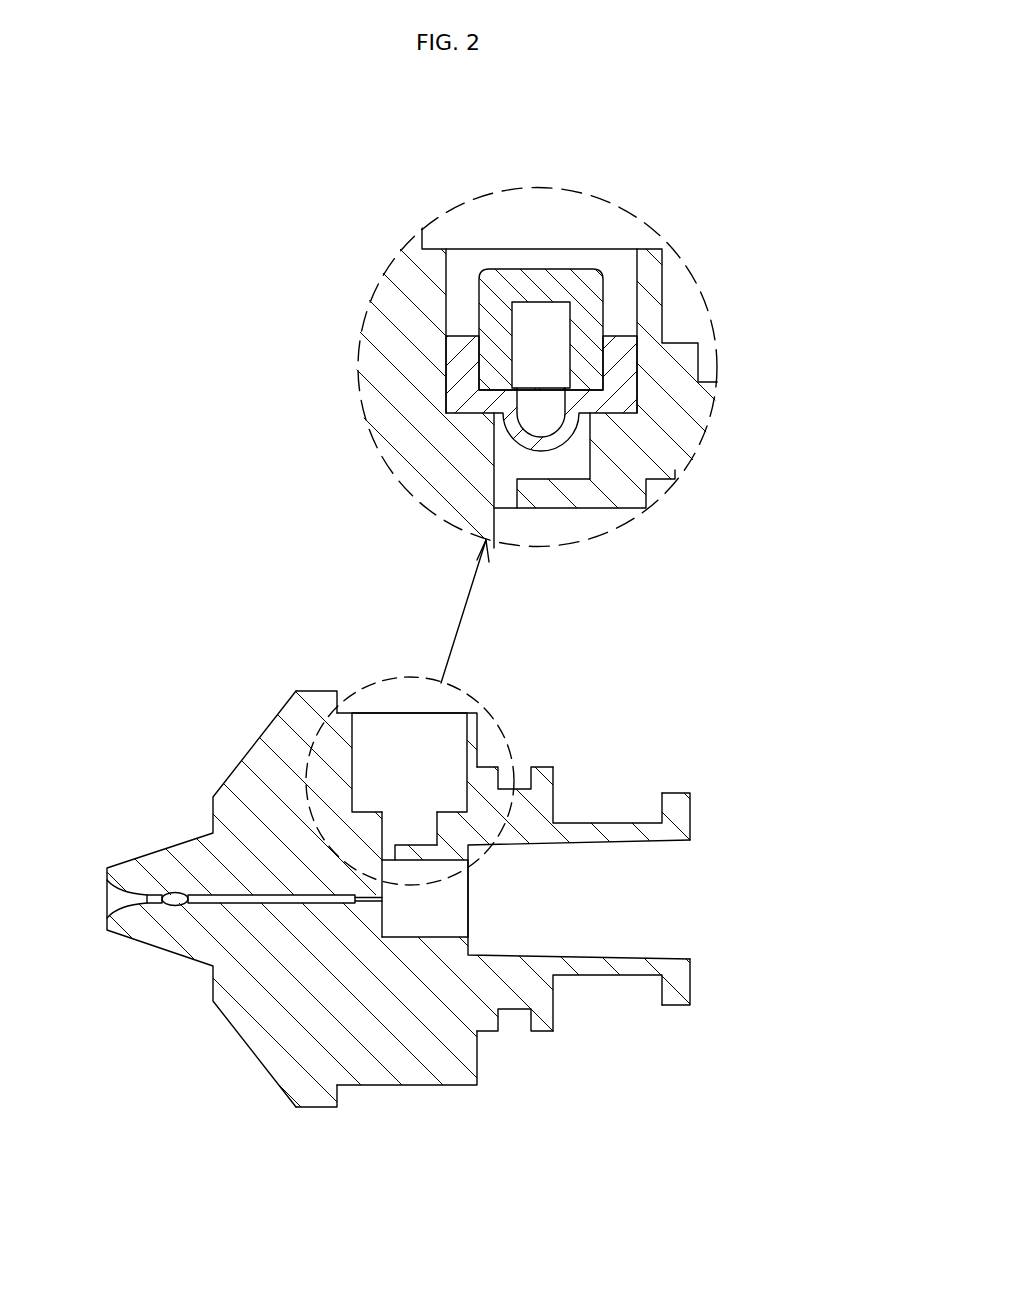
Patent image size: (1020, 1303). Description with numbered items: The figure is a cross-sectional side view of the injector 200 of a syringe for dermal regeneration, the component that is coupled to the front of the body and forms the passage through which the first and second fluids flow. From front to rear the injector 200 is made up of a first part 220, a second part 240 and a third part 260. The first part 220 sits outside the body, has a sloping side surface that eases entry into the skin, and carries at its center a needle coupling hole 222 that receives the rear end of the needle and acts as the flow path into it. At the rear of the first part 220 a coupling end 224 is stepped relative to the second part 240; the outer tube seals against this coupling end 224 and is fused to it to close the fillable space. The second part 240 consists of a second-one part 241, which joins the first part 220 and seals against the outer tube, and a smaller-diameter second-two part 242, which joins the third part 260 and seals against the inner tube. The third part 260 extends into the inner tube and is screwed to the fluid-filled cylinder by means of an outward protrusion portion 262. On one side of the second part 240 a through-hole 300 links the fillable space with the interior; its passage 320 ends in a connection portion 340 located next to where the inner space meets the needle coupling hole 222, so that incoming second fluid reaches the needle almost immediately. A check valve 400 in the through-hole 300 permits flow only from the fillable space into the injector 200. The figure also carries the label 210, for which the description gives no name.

The injector 200 is at (135, 667).
The inlet passage 210 is at (580, 880).
The first part 220 is at (265, 1028).
The needle coupling hole 222 is at (120, 900).
The coupling end 224 is at (347, 1108).
The second part 240 is at (468, 1205).
The second-1 part 241 is at (430, 1062).
The second-2 part 242 is at (513, 1012).
The third part 260 is at (615, 967).
The protrusion portion 262 is at (685, 987).
The through-hole 300 is at (428, 748).
The passage 320 is at (509, 448).
The connection portion 340 is at (392, 853).
The check valve 400 is at (590, 305).